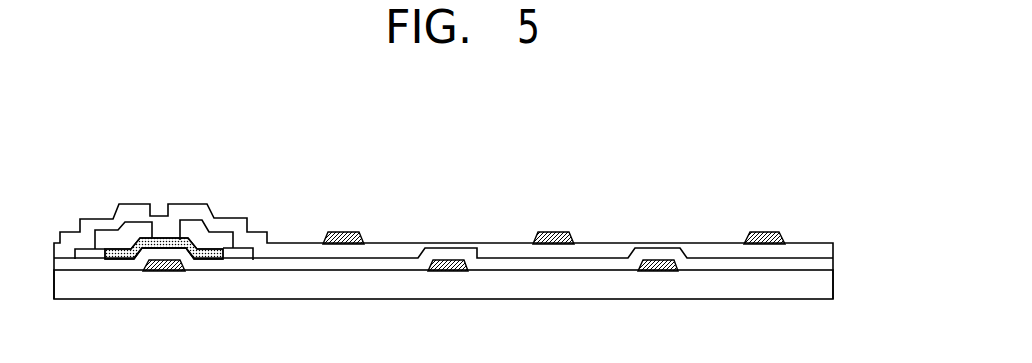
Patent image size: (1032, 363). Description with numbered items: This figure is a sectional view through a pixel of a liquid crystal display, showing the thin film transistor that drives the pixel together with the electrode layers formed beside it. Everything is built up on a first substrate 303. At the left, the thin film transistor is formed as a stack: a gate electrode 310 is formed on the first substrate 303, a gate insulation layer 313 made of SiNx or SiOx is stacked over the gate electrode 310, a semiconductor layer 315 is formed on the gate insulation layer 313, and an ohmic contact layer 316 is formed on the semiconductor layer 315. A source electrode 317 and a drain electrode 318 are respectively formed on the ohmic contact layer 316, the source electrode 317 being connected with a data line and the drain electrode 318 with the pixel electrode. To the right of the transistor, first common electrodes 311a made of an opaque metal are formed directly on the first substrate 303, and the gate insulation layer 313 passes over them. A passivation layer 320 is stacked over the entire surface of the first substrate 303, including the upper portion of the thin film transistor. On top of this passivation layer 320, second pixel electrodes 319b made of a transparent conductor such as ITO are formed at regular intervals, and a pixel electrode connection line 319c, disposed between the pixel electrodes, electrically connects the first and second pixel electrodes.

The first substrate 303 is at (833, 283).
The gate electrode 310 is at (163, 272).
The first common electrodes 311a is at (447, 272).
The gate insulation layer 313 is at (833, 258).
The semiconductor layer 315 is at (202, 260).
The ohmic contact layer 316 is at (116, 260).
The source electrode 317 is at (137, 224).
The drain electrode 318 is at (192, 224).
The second pixel electrodes 319b is at (341, 232).
The pixel electrode connection line 319c is at (551, 232).
The passivation layer 320 is at (833, 244).